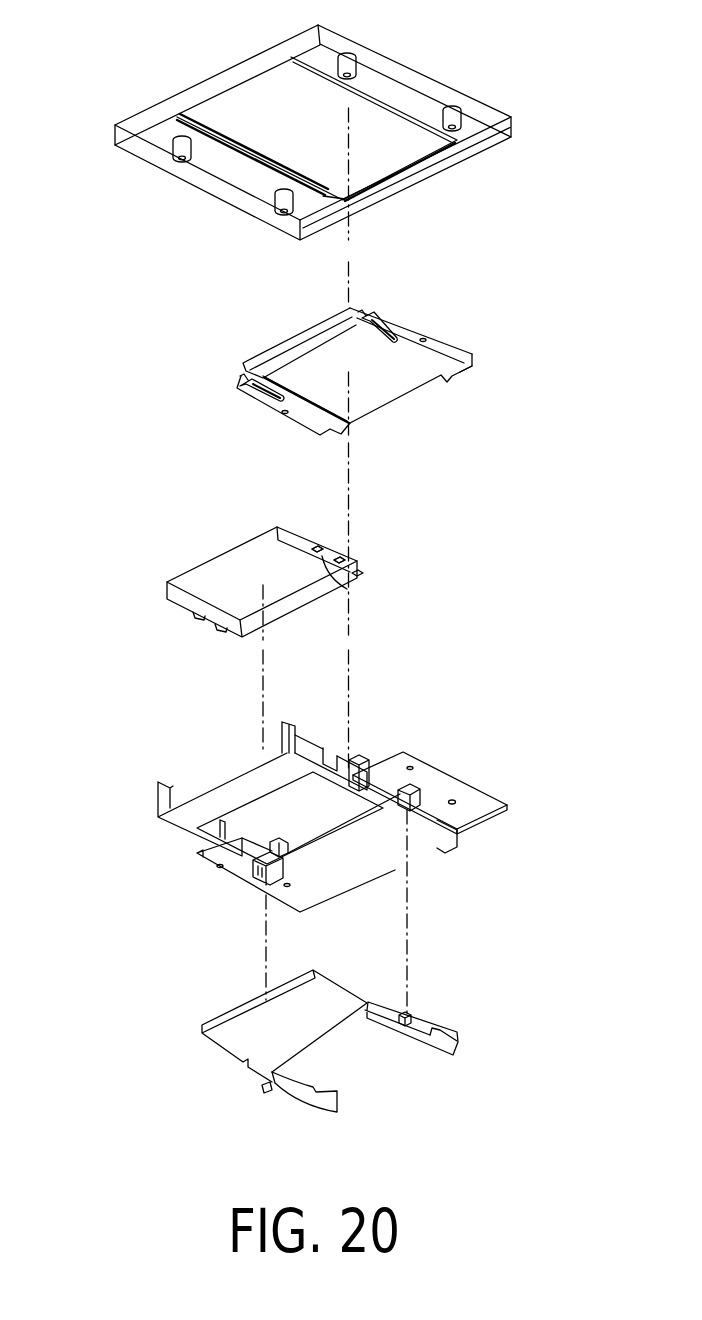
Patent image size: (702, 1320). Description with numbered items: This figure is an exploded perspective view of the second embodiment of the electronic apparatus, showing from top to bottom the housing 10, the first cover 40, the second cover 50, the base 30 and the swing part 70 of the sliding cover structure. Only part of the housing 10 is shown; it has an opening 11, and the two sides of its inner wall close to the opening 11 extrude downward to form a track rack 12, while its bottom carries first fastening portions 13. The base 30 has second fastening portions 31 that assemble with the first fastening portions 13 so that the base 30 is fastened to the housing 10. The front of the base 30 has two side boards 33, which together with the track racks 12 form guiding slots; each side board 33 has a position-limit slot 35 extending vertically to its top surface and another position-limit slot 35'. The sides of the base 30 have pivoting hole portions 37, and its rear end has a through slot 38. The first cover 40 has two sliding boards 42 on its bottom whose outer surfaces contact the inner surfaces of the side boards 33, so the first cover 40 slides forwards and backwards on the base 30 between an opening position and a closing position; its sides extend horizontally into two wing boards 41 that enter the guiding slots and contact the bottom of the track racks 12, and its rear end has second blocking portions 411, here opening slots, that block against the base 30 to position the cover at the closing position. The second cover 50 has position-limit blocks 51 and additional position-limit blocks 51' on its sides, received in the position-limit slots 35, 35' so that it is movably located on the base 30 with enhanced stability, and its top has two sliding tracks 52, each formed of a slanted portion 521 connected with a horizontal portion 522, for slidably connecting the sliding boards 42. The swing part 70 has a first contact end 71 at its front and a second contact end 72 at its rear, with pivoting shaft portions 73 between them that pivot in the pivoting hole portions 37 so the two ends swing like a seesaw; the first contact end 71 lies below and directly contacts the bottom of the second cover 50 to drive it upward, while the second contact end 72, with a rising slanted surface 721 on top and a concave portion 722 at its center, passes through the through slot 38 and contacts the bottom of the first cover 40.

The housing 10 is at (152, 182).
The opening 11 is at (275, 127).
The track rack 12 is at (398, 103).
The first fastening portion 13 is at (457, 118).
The first cover 40 is at (220, 357).
The wing board 41 is at (438, 340).
The second blocking portion 411 is at (478, 358).
The sliding board 42 is at (364, 322).
The second cover 50 is at (209, 540).
The position-limit block 51 is at (365, 589).
The position-limit block 51' is at (394, 562).
The sliding track 52 is at (435, 470).
The slanted portion 521 is at (336, 558).
The horizontal portion 522 is at (312, 547).
The base 30 is at (196, 745).
The second fastening portion 31 is at (452, 802).
The side board 33 is at (340, 757).
The position-limit slot 35 is at (301, 713).
The position-limit slot 35' is at (397, 747).
The pivoting hole portion 37 is at (405, 792).
The through slot 38 is at (437, 833).
The swing part 70 is at (186, 1010).
The first contact end 71 is at (250, 1003).
The second contact end 72 is at (458, 1042).
The slanted surface 721 is at (447, 1027).
The concave portion 722 is at (380, 1067).
The pivoting shaft portion 73 is at (410, 1014).